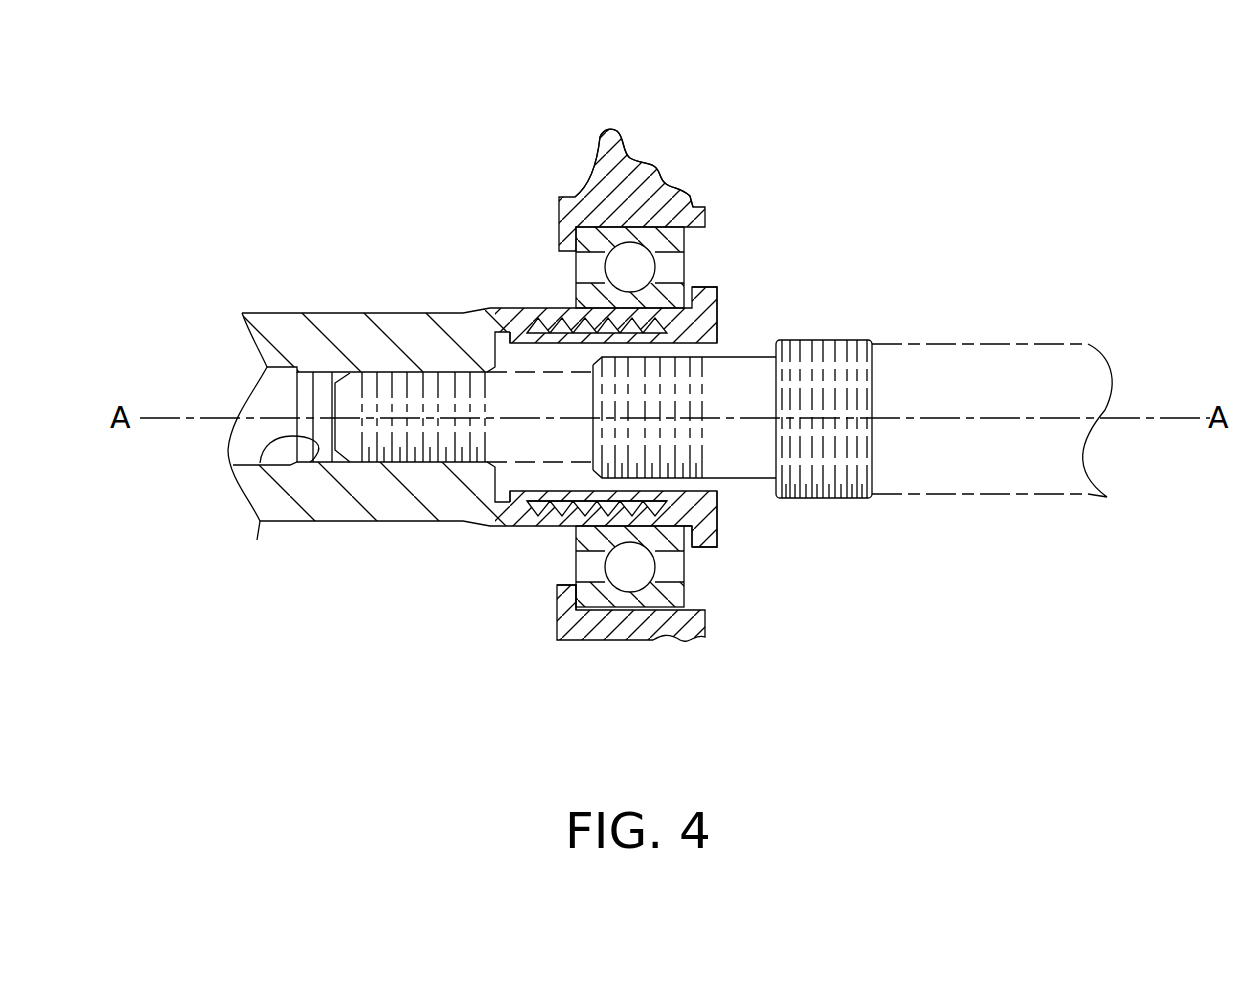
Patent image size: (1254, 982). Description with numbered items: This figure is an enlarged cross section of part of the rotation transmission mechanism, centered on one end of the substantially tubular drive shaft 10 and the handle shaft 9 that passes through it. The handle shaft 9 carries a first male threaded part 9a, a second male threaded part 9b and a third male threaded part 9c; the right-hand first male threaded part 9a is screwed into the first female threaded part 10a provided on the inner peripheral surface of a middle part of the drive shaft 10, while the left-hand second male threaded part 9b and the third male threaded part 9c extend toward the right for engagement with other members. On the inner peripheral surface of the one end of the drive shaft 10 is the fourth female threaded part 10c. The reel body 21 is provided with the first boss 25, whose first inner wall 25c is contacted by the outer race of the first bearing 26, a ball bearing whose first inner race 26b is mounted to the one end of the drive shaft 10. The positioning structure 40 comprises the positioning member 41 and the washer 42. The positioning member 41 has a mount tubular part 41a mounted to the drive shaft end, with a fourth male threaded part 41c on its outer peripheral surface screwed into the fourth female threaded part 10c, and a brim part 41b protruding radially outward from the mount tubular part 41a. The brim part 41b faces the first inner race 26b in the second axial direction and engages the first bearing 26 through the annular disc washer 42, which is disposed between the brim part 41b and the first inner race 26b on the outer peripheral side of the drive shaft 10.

The handle shaft 9 is at (987, 343).
The first male threaded part 9a is at (383, 387).
The second male threaded part 9b is at (690, 385).
The third male threaded part 9c is at (860, 378).
The drive shaft 10 is at (382, 540).
The first female threaded part 10a is at (260, 463).
The fourth female threaded part 10c is at (595, 490).
The reel body 21 is at (673, 148).
The first boss 25 is at (618, 137).
The first inner wall 25c is at (560, 595).
The first bearing 26 is at (552, 270).
The first inner race 26b is at (673, 543).
The positioning structure 40 is at (735, 263).
The positioning member 41 is at (732, 540).
The mount tubular part 41a is at (520, 530).
The brim part 41b is at (693, 550).
The fourth male threaded part 41c is at (532, 508).
The washer 42 is at (683, 540).